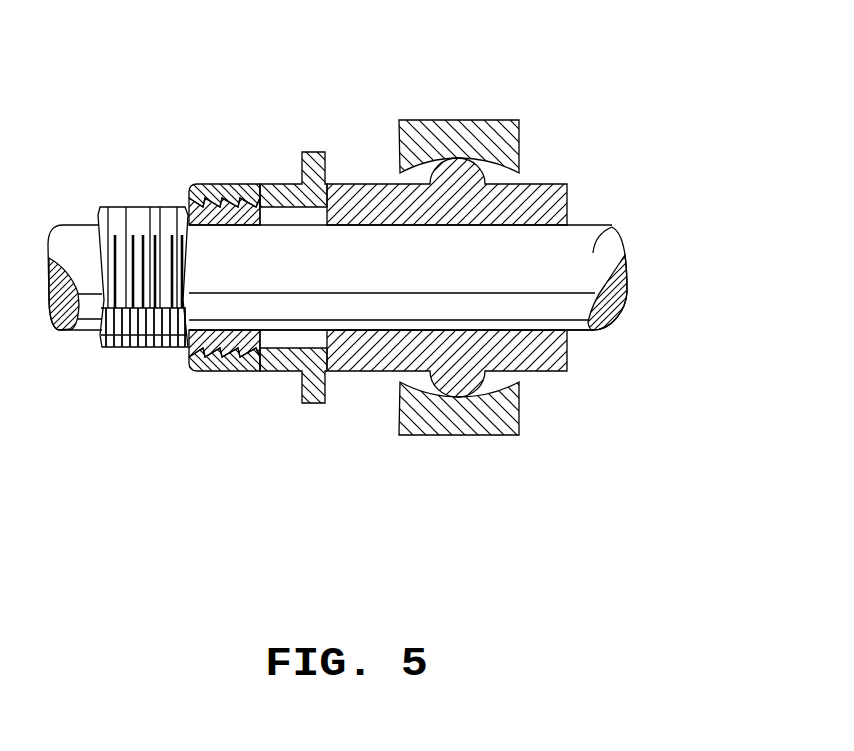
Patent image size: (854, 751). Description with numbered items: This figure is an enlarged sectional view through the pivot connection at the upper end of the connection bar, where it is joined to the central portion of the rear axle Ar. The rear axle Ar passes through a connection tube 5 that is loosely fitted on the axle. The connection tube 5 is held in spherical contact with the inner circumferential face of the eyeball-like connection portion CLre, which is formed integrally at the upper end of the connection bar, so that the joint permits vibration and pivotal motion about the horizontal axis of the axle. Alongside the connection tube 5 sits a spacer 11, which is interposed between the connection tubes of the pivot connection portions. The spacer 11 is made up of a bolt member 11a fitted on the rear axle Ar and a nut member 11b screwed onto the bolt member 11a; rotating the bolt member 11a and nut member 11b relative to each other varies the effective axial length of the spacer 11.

The spacer 11 is at (146, 190).
The bolt member 11a is at (114, 209).
The nut member 11b is at (207, 185).
The connection tube 5 is at (553, 185).
The eyeball-like connection portion CLre is at (435, 127).
The rear axle Ar is at (612, 227).